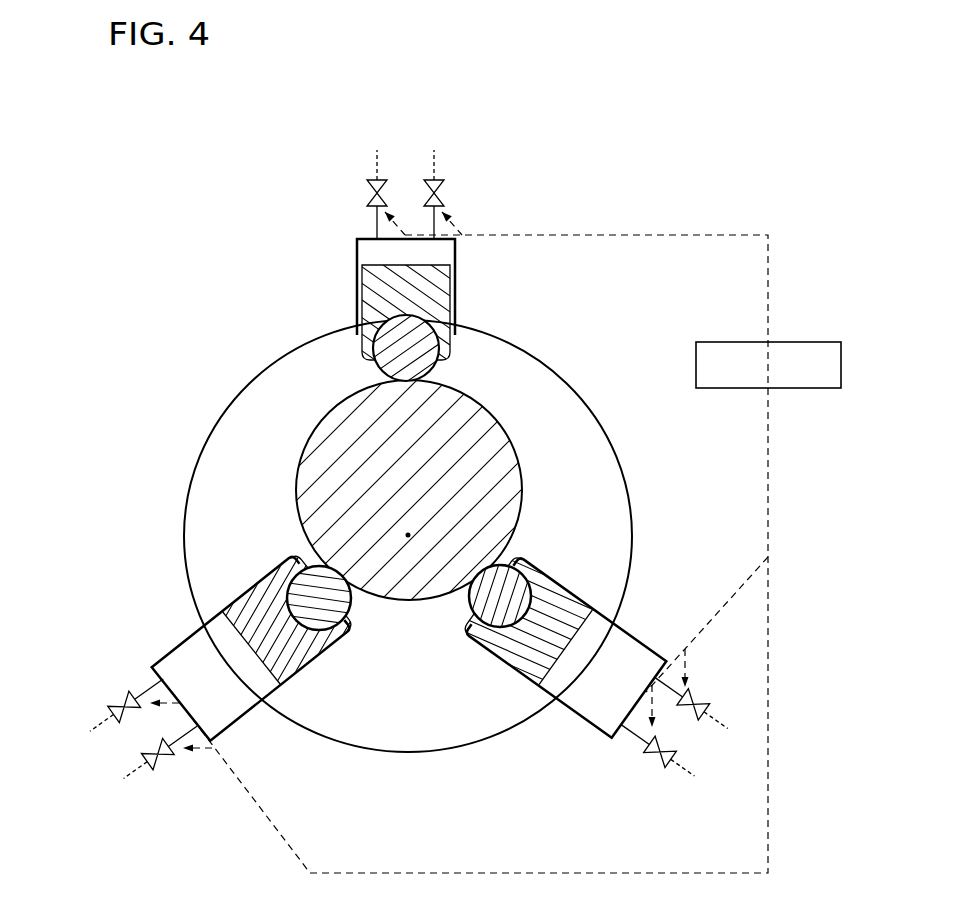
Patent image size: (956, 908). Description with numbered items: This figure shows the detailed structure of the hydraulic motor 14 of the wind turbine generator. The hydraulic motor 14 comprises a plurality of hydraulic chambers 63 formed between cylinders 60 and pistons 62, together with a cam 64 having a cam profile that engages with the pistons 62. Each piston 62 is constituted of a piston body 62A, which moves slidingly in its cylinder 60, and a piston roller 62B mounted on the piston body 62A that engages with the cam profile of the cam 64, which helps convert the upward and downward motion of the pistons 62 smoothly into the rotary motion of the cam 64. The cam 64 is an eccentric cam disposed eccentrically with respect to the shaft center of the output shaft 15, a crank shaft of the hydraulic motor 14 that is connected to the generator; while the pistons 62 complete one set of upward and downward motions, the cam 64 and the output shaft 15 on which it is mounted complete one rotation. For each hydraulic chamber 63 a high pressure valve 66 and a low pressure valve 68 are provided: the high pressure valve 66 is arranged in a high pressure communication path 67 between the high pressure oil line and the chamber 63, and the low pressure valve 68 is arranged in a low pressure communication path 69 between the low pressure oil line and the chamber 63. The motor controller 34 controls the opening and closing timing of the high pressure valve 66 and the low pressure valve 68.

The hydraulic motor 14 is at (172, 338).
The output shaft 15 is at (610, 442).
The motor controller 34 is at (806, 342).
The cylinder 60 is at (456, 280).
The piston 62 is at (363, 522).
The piston body 62A is at (440, 333).
The piston roller 62B is at (437, 372).
The hydraulic chamber 63 is at (456, 250).
The cam 64 is at (521, 480).
The high pressure valve 66 is at (446, 192).
The high pressure communication path 67 is at (434, 150).
The low pressure valve 68 is at (366, 192).
The low pressure communication path 69 is at (377, 150).